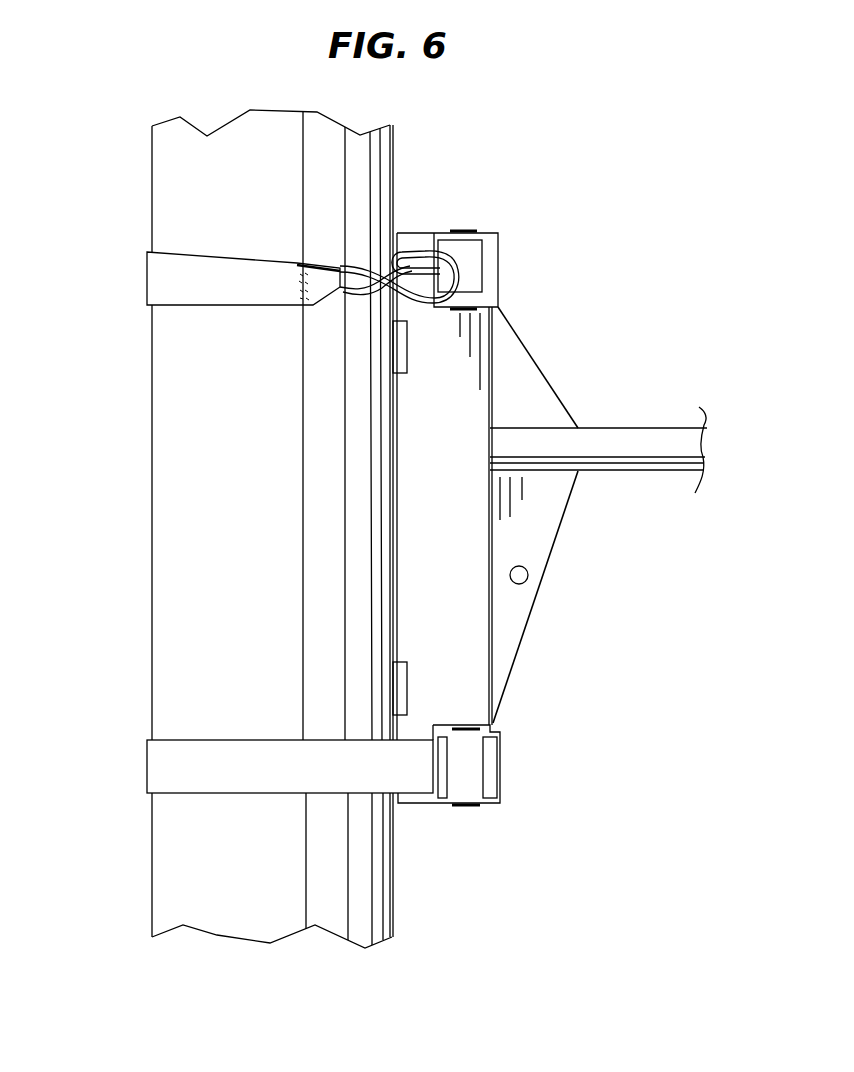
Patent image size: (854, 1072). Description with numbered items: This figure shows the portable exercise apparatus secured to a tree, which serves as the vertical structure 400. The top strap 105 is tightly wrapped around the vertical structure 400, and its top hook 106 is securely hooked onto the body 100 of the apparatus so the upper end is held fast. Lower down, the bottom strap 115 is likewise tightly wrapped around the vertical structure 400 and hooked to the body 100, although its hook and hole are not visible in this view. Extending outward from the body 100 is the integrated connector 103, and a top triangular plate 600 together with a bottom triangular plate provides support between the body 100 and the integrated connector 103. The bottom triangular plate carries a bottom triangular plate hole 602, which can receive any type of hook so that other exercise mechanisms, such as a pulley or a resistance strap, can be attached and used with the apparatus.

The vertical structure 400 is at (163, 493).
The top strap 105 is at (193, 263).
The top hook 106 is at (417, 300).
The body 100 is at (458, 697).
The integrated connector 103 is at (637, 430).
The top triangular plate 600 is at (522, 378).
The bottom triangular plate hole 602 is at (528, 575).
The bottom strap 115 is at (198, 755).